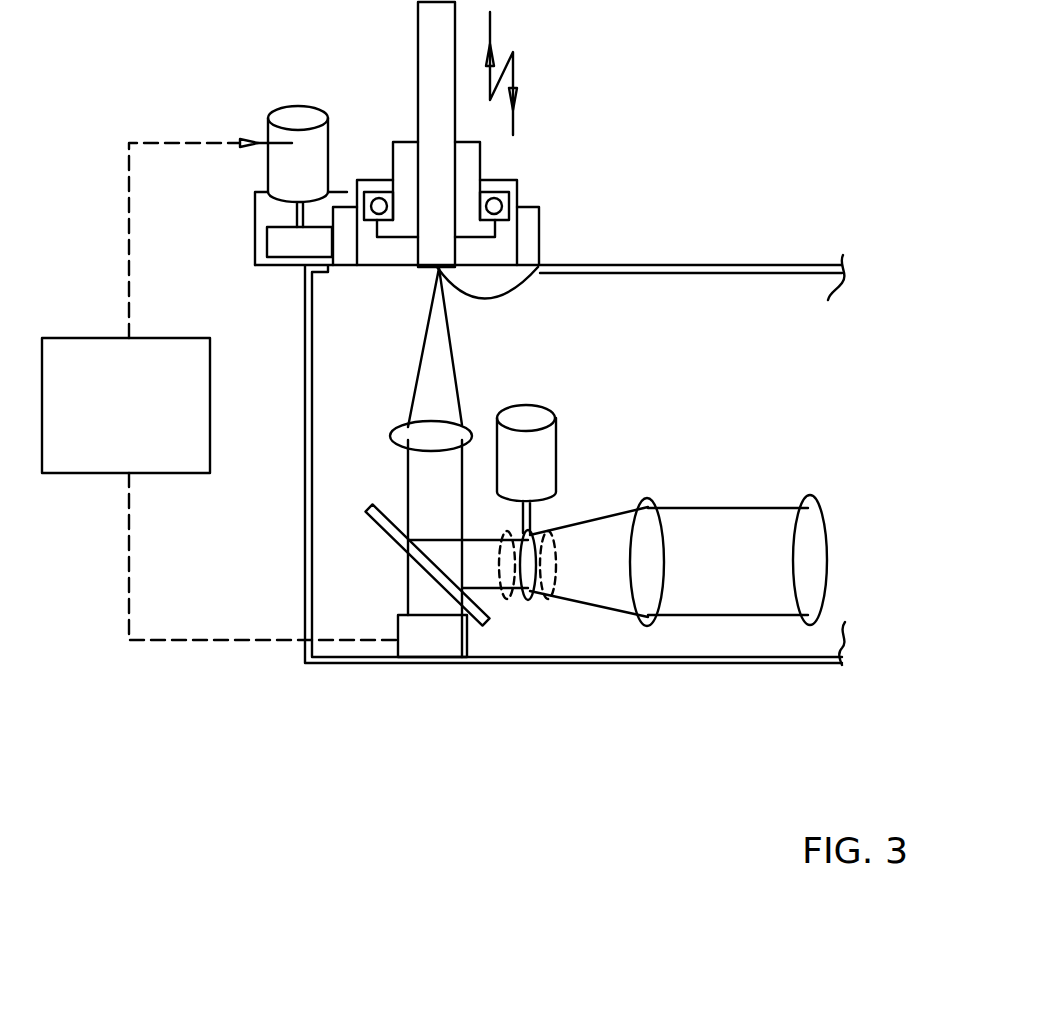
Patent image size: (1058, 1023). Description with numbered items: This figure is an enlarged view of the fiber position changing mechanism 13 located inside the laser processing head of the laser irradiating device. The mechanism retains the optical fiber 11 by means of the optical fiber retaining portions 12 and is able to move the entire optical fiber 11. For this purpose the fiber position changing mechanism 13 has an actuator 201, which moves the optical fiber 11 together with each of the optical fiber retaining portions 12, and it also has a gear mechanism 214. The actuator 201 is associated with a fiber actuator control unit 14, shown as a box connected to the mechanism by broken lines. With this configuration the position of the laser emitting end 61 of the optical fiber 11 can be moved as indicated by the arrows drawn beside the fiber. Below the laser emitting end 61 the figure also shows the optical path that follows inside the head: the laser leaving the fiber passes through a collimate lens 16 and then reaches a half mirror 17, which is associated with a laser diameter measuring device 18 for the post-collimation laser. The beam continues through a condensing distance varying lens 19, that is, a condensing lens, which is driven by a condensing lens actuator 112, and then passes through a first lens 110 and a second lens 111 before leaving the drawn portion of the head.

The optical fiber 11 is at (430, 42).
The optical fiber retaining portion 12 is at (473, 167).
The fiber position changing mechanism 13 is at (500, 205).
The fiber actuator control unit 14 is at (142, 428).
The collimate lens 16 is at (397, 427).
The half mirror 17 is at (375, 505).
The laser diameter measuring device 18 is at (440, 645).
The condensing distance varying lens 19 is at (528, 600).
The laser emitting end 61 is at (530, 275).
The first lens 110 is at (650, 500).
The second lens 111 is at (808, 500).
The condensing lens actuator 112 is at (543, 415).
The actuator 201 is at (300, 116).
The gear mechanism 214 is at (347, 205).